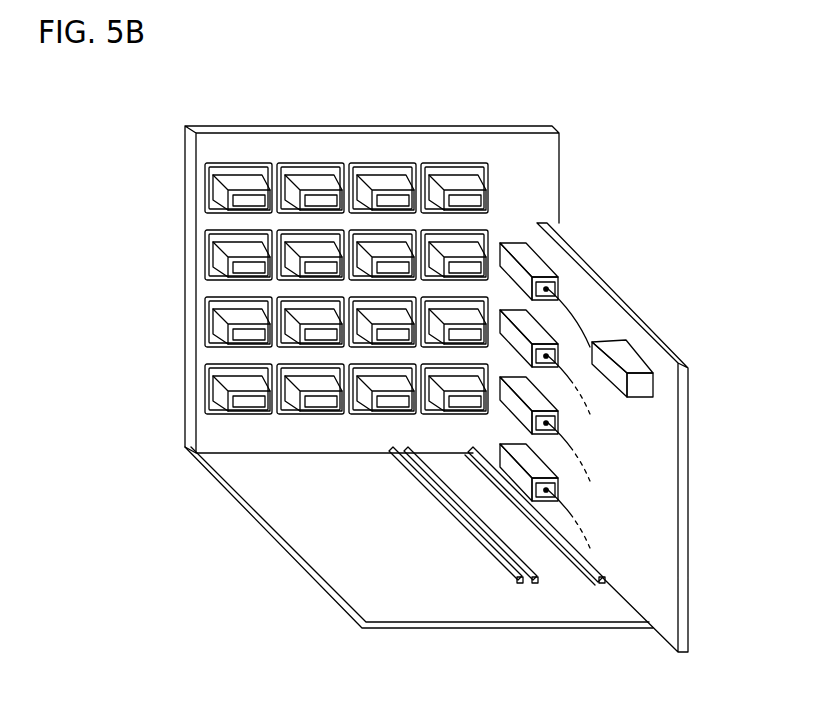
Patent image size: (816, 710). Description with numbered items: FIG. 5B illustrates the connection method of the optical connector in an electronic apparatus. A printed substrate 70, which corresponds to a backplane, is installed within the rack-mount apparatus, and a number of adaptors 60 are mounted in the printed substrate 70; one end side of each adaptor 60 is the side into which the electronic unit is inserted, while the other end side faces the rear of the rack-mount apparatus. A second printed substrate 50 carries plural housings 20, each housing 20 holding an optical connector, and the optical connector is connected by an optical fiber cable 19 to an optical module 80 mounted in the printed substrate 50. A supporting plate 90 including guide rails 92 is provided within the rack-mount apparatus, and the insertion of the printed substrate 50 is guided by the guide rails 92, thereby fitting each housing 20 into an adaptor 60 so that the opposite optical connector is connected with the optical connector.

The printed substrate 70 is at (541, 113).
The adaptor 60 is at (441, 149).
The printed substrate 50 is at (708, 573).
The supporting plate 90 is at (377, 629).
The housing 20 is at (557, 255).
The optical fiber cable 19 is at (572, 310).
The optical module 80 is at (670, 388).
The guide rail 92 is at (520, 584).